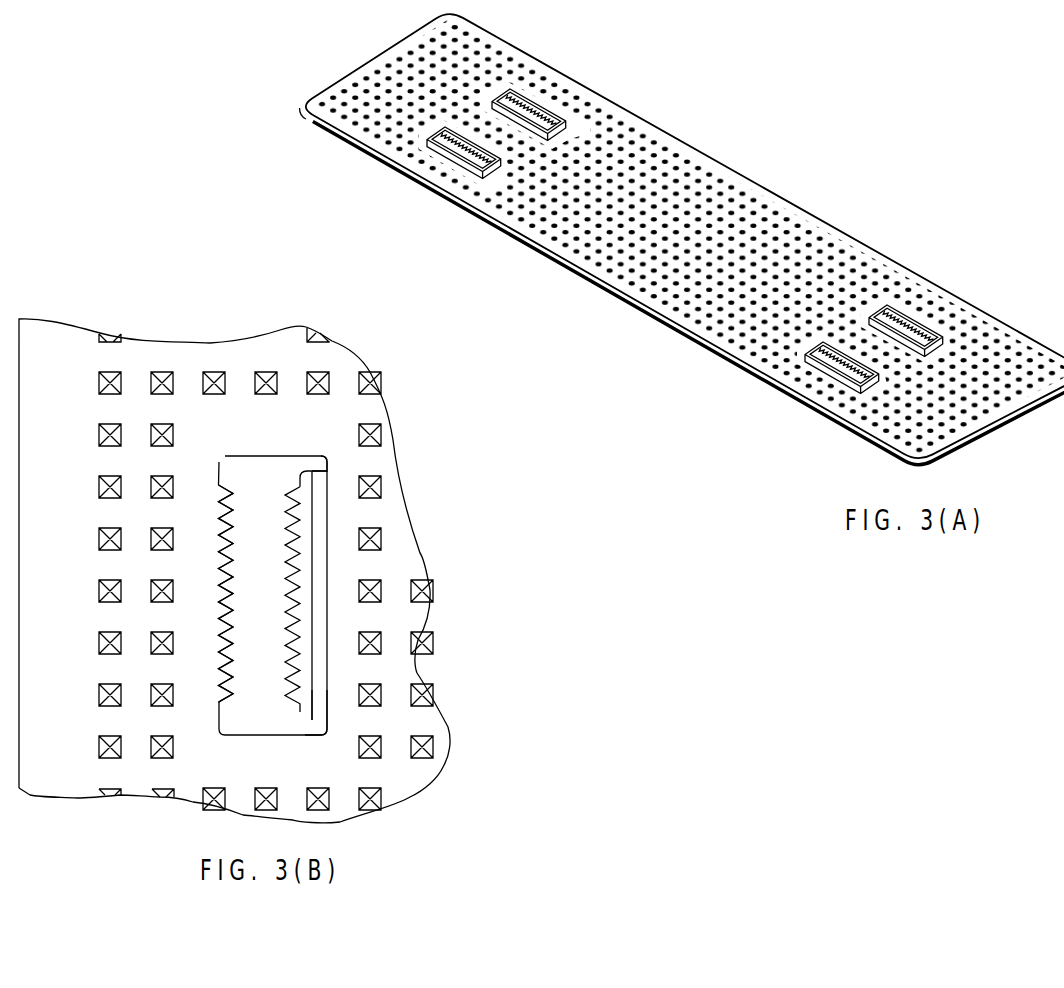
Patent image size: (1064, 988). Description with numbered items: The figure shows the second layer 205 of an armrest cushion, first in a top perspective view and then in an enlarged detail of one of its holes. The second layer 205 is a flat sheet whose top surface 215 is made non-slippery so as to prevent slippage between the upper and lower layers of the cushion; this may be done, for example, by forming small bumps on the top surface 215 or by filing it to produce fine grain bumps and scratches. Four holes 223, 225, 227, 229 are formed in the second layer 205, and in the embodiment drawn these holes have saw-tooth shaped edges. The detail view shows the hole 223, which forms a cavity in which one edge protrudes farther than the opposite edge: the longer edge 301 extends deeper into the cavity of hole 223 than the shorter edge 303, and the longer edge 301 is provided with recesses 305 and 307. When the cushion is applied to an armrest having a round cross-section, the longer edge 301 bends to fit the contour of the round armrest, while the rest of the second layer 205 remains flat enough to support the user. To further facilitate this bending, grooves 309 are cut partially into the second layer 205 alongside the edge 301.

In FIG. 3A, the second layer 205 is at (772, 191).
In FIG. 3B, the second layer 205 is at (72, 321).
In FIG. 3A, the top surface 215 is at (863, 254).
In FIG. 3B, the top surface 215 is at (356, 353).
In FIG. 3A, the hole 223 is at (502, 163).
In FIG. 3B, the hole 223 is at (250, 480).
In FIG. 3A, the hole 225 is at (563, 133).
In FIG. 3A, the hole 227 is at (805, 351).
In FIG. 3A, the hole 229 is at (887, 306).
In FIG. 3B, the edge 301 is at (333, 576).
In FIG. 3B, the edge 303 is at (216, 588).
In FIG. 3B, the recess 305 is at (320, 463).
In FIG. 3B, the recess 307 is at (315, 727).
In FIG. 3B, the groove 309 is at (318, 687).